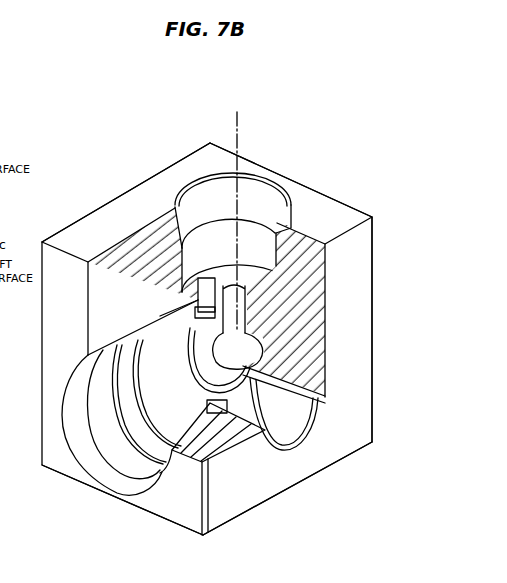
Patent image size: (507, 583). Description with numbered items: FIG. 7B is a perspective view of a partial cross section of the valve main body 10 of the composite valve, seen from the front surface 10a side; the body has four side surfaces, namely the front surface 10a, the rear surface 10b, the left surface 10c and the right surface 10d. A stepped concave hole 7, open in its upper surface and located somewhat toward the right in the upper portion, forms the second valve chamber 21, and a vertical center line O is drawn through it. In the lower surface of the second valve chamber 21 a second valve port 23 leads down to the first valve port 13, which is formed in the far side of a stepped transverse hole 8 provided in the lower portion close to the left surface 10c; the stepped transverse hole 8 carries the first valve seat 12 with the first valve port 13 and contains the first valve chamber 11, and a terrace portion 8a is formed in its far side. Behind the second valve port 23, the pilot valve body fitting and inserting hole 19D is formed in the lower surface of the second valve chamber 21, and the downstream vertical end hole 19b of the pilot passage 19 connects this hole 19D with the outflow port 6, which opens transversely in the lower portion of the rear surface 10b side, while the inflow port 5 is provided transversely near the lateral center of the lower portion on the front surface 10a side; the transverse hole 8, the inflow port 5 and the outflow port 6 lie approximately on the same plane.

The valve main body 10 is at (160, 170).
The front surface 10a is at (355, 432).
The rear surface 10b is at (98, 208).
The left surface 10c is at (143, 508).
The right surface 10d is at (330, 195).
The central axis O is at (236, 212).
The stepped concave hole 7 is at (270, 186).
The second valve chamber 21 is at (215, 237).
The pilot valve body fitting and inserting hole 19D is at (210, 277).
The second valve port 23 is at (244, 284).
The downstream vertical end hole 19b is at (196, 310).
The pilot passage 19 is at (172, 308).
The outflow port 6 is at (231, 343).
The first valve seat 12 is at (212, 373).
The first valve port 13 is at (215, 375).
The stepped transverse hole 8 is at (97, 448).
The terrace portion 8a is at (142, 360).
The first valve chamber 11 is at (162, 408).
The inflow port 5 is at (293, 413).